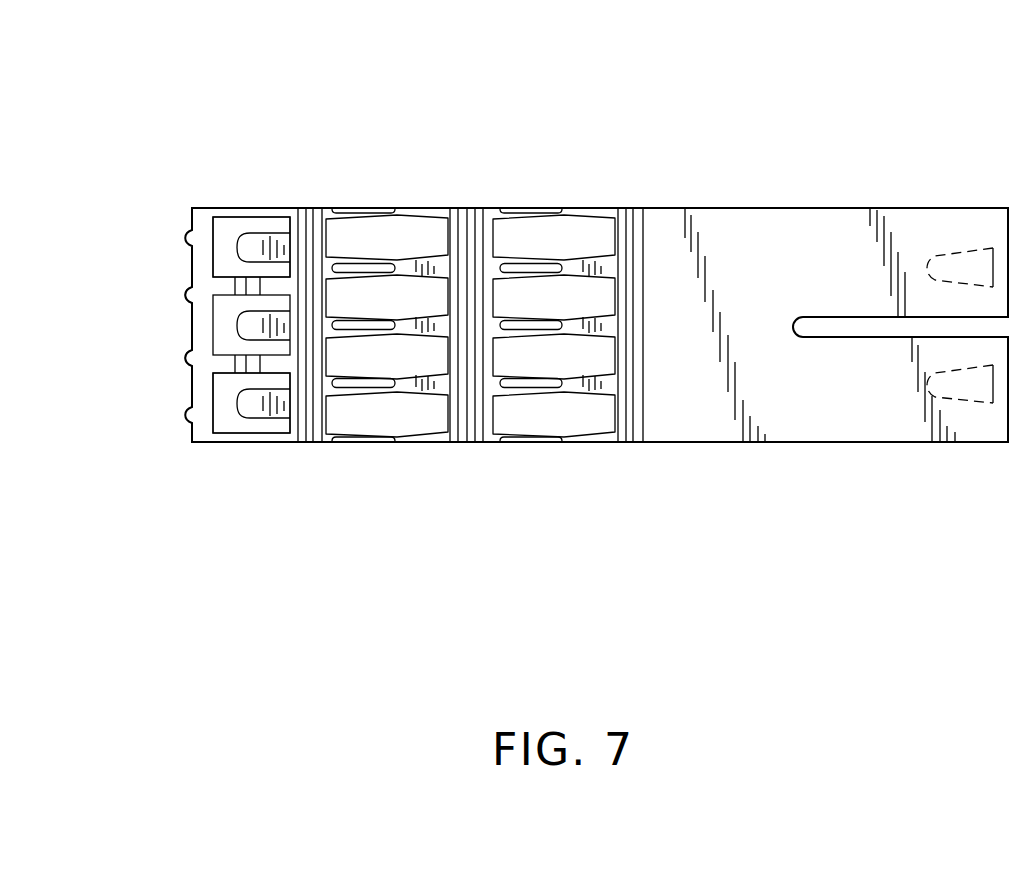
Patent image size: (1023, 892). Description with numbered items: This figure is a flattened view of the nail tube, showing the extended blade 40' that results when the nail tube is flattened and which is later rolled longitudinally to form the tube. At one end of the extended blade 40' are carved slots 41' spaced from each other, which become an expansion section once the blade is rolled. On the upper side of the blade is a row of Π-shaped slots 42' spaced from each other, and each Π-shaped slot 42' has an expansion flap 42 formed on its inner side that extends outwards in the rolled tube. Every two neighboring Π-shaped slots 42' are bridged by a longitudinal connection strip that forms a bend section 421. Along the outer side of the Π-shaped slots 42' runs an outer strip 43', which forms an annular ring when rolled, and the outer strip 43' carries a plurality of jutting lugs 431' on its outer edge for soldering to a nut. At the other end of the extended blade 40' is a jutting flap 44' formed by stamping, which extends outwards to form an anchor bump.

The extended blade 40' is at (596, 241).
The carved slot 41' is at (470, 409).
The expansion flap 42 is at (269, 314).
The Π-shaped slot 42' is at (258, 307).
The bend section 421 is at (250, 283).
The outer strip 43' is at (160, 245).
The jutting lugs 431' is at (103, 326).
The jutting flap 44' is at (955, 416).